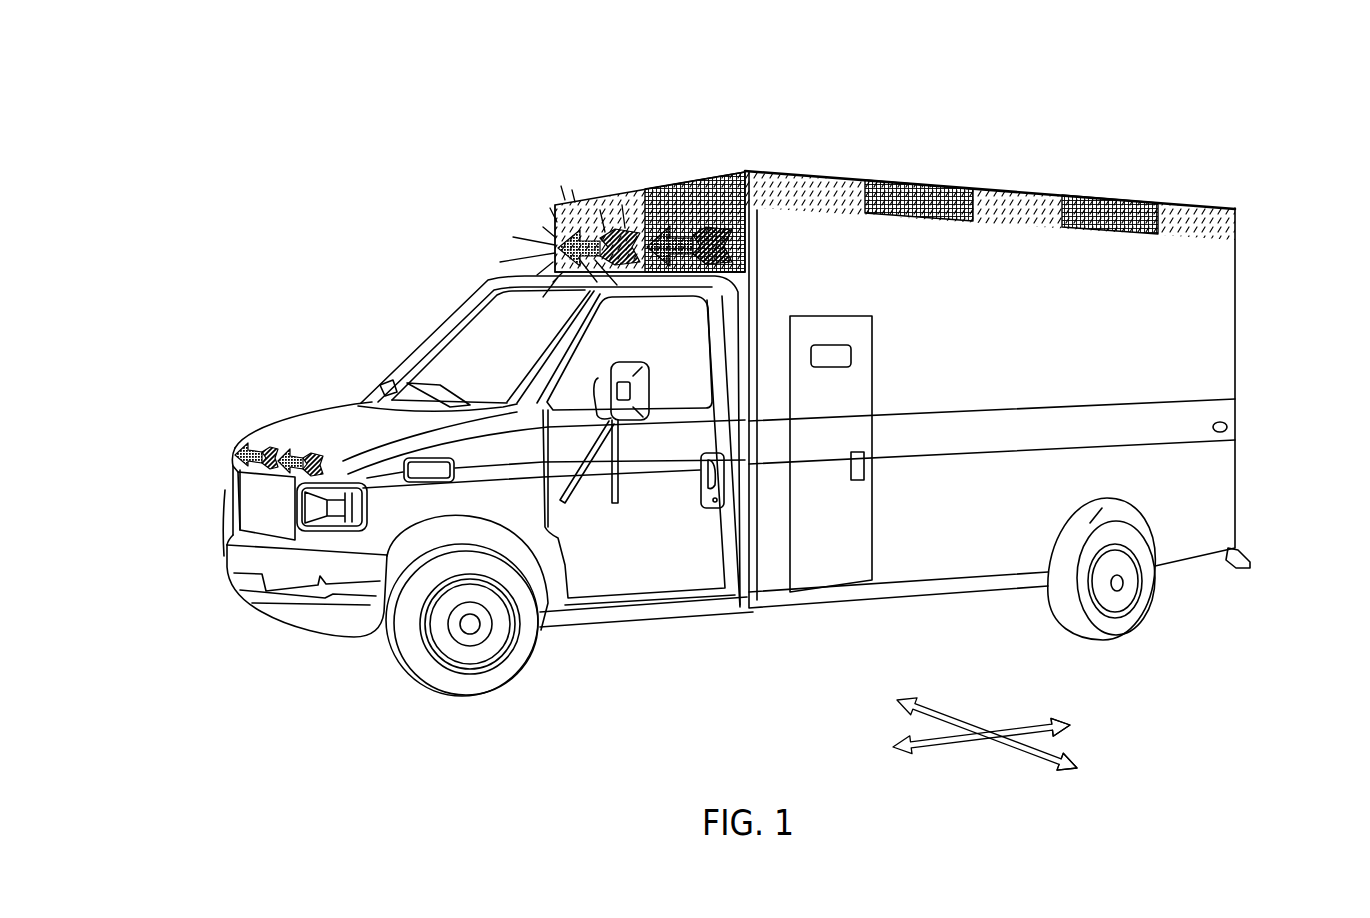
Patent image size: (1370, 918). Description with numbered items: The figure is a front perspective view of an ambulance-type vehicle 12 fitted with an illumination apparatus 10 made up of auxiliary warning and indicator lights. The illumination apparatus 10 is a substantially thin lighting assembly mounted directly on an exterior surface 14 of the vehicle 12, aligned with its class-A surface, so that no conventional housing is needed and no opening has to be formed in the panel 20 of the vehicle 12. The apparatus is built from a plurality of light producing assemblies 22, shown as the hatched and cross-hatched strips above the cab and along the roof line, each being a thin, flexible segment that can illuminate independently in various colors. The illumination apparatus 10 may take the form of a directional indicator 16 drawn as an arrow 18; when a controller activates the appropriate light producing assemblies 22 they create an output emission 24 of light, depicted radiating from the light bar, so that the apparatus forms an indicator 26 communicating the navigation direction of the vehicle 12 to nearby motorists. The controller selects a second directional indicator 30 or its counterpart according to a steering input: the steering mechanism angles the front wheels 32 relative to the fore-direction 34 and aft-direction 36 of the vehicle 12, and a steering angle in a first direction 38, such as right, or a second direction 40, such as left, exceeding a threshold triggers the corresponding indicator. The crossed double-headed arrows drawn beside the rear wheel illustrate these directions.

The illumination apparatus 10 is at (690, 141).
The vehicle 12 is at (408, 120).
The exterior surface 14 is at (1198, 343).
The directional indicator 16 is at (690, 232).
The arrow 18 is at (553, 258).
The panel 20 is at (992, 431).
The light producing assembly 22 is at (557, 205).
The output emission 24 is at (533, 223).
The indicator 26 is at (683, 270).
The second directional indicator 30 is at (748, 196).
The front wheels 32 is at (425, 701).
The fore-direction 34 is at (938, 748).
The aft-direction 36 is at (1030, 718).
The first direction 38 is at (940, 713).
The second direction 40 is at (1032, 758).